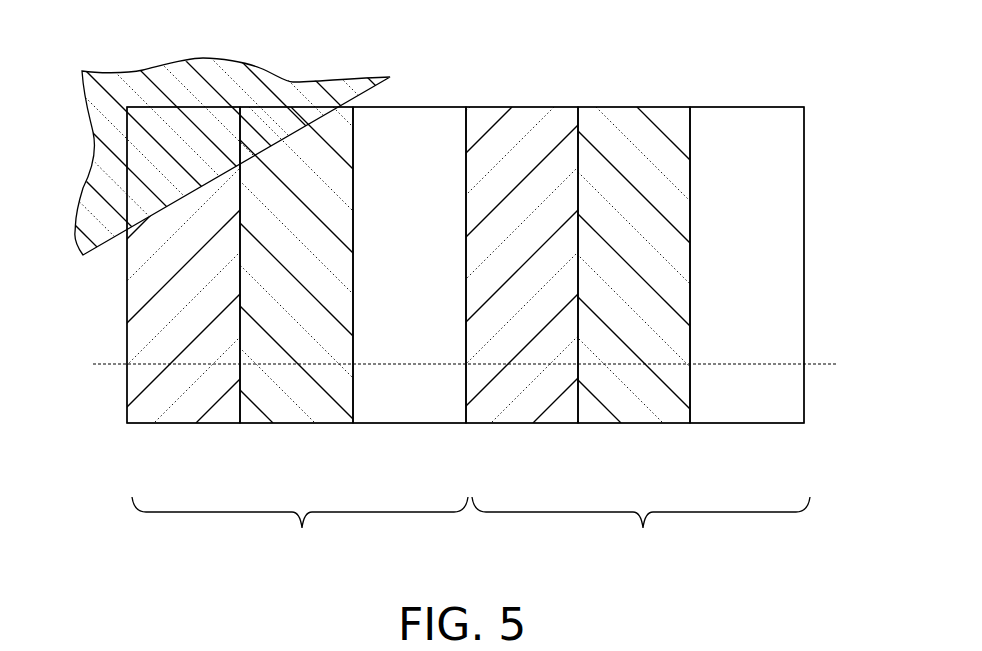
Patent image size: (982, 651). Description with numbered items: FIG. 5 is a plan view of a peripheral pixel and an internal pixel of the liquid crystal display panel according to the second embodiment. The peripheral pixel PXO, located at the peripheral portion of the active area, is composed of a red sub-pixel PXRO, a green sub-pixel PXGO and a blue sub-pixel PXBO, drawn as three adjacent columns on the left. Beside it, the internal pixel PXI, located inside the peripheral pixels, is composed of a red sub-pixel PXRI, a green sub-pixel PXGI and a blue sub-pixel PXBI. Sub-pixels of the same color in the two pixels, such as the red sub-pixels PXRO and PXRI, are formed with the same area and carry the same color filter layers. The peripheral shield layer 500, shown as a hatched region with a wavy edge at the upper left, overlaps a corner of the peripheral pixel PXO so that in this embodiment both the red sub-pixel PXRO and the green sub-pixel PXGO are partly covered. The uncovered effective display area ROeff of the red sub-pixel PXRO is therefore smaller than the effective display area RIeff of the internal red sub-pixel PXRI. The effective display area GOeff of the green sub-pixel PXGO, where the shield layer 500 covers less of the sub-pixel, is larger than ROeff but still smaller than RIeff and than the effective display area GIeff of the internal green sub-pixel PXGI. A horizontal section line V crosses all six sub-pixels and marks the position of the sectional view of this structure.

The peripheral shield layer 500 is at (253, 67).
The effective display area of the red sub-pixel of the peripheral pixel ROeff is at (167, 299).
The effective display area of the green sub-pixel of the peripheral pixel GOeff is at (336, 258).
The effective display area of the red sub-pixel of the internal pixel RIeff is at (520, 124).
The effective display area of the green sub-pixel of the internal pixel GIeff is at (628, 124).
The red sub-pixel of the peripheral pixel PXRO is at (184, 437).
The green sub-pixel of the peripheral pixel PXGO is at (297, 437).
The blue sub-pixel of the peripheral pixel PXBO is at (414, 437).
The red sub-pixel of the internal pixel PXRI is at (517, 437).
The green sub-pixel of the internal pixel PXGI is at (637, 437).
The blue sub-pixel of the internal pixel PXBI is at (752, 437).
The peripheral pixel PXO is at (300, 529).
The internal pixel PXI is at (641, 529).
The section line V- V is at (465, 364).